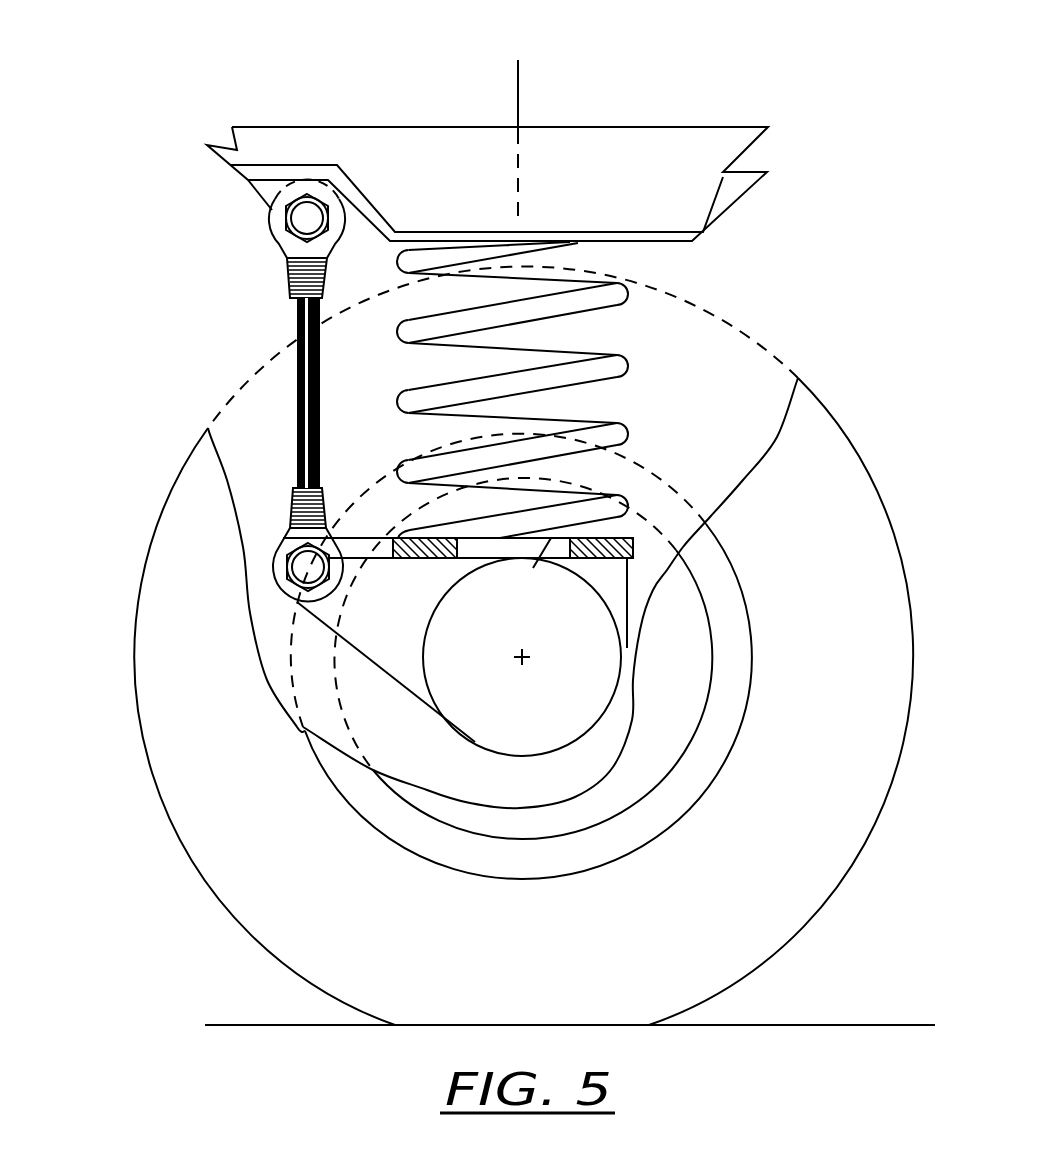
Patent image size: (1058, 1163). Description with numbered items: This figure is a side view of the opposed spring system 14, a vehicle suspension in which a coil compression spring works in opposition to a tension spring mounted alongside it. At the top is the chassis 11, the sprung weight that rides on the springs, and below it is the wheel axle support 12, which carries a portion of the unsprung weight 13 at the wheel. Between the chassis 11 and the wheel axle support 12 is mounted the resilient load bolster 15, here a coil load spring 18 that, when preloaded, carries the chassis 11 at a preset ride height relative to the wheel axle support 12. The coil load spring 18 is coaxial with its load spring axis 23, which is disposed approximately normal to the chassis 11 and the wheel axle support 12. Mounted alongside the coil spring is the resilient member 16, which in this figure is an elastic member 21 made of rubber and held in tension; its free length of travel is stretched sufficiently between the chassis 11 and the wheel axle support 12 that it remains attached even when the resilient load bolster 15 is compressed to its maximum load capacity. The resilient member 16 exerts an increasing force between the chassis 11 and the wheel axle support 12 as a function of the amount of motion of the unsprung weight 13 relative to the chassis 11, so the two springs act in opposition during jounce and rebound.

The chassis 11 is at (723, 122).
The wheel axle support 12 is at (550, 562).
The unsprung weight 13 is at (915, 647).
The opposed spring system 14 is at (310, 110).
The resilient load bolster 15 is at (628, 368).
The resilient member 16 is at (296, 315).
The coil load spring 18 is at (622, 292).
The elastic member 21 is at (294, 390).
The load spring axis 23 is at (528, 78).